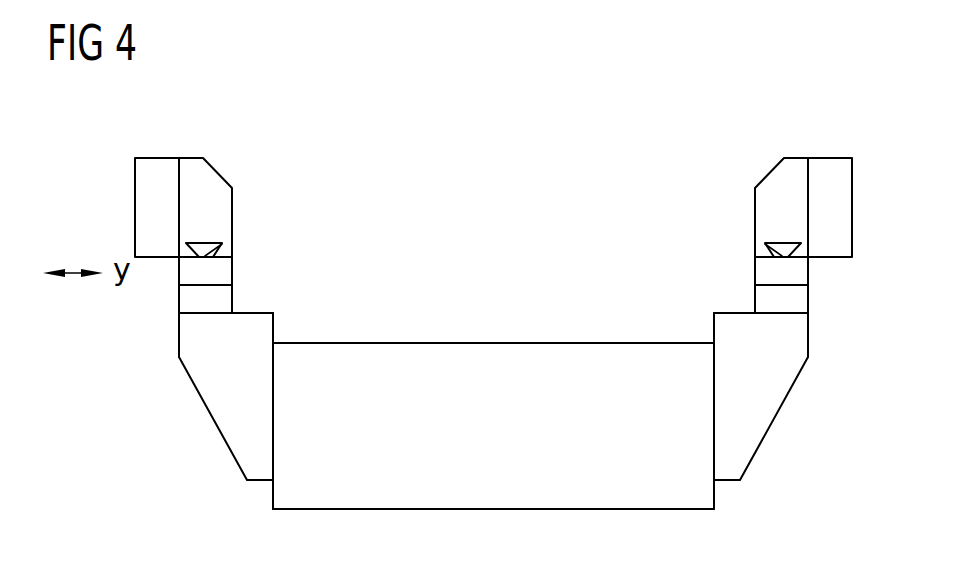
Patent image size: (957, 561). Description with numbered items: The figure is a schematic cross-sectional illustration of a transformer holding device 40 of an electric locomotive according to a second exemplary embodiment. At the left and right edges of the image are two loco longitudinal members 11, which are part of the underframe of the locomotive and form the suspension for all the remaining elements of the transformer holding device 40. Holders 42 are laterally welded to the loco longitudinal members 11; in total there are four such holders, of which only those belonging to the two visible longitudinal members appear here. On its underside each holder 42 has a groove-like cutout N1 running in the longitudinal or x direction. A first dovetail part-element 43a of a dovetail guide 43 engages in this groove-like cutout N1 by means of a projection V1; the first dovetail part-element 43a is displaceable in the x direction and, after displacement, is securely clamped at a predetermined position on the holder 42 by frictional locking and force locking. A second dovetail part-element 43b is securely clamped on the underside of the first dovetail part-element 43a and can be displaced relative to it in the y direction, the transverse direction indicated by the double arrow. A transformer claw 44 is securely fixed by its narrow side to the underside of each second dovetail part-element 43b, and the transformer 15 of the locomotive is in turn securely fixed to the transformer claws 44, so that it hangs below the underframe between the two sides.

The transformer holding device 40 is at (589, 111).
The loco longitudinal member 11 is at (158, 166).
The holder 42 is at (204, 170).
The dovetail guide 43 is at (494, 252).
The first dovetail part-element 43a is at (223, 272).
The second dovetail part-element 43b is at (186, 299).
The transformer claw 44 is at (217, 412).
The transformer 15 is at (495, 348).
The groove-like cutout N1 is at (788, 243).
The projection V1 is at (765, 244).